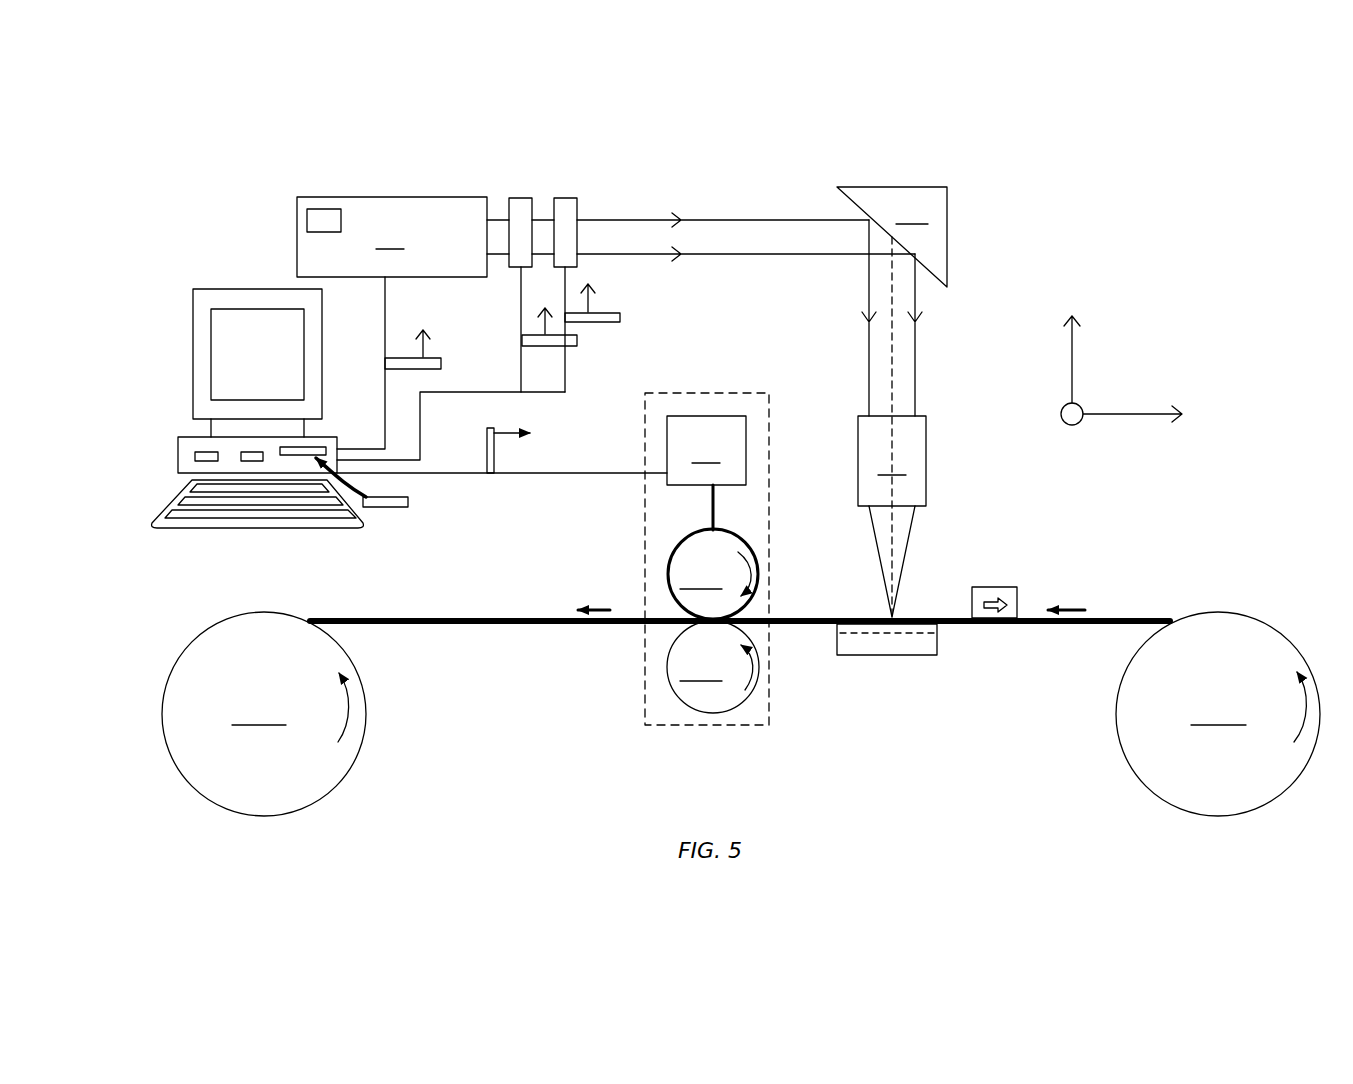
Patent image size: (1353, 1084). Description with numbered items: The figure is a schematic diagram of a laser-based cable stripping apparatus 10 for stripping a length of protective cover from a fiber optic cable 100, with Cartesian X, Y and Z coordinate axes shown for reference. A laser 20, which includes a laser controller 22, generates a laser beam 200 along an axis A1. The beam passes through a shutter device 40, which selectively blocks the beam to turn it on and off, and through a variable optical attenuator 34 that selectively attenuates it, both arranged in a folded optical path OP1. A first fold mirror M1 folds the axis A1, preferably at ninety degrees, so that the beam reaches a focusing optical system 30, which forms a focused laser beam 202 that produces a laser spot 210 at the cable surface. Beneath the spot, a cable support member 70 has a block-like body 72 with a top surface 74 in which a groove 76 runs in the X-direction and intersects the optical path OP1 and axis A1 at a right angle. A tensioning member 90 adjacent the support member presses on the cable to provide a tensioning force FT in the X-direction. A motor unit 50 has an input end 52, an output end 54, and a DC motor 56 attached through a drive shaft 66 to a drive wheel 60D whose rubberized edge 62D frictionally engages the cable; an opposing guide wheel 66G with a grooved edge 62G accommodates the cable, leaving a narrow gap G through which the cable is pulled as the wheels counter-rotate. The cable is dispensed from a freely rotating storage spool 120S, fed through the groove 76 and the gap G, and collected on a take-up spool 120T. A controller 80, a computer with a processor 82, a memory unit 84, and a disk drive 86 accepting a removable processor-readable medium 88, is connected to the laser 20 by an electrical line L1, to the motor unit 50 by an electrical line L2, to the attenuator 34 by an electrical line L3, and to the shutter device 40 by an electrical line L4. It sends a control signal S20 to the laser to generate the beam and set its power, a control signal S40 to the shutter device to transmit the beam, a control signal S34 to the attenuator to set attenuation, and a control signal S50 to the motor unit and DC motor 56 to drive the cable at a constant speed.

The laser-based cable stripping apparatus 10 is at (1006, 140).
The laser 20 is at (392, 237).
The laser controller 22 is at (307, 220).
The focusing optical system 30 is at (892, 461).
The variable optical attenuator 34 is at (566, 198).
The shutter device 40 is at (520, 198).
The motor unit 50 is at (706, 393).
The input end 52 is at (784, 682).
The output end 54 is at (636, 691).
The DC motor 56 is at (706, 450).
The drive wheel 60D is at (713, 574).
The rubberized edge 62D is at (672, 553).
The edge of guide wheel 62G is at (668, 659).
The drive shaft 66 is at (712, 527).
The guide roller 66G is at (713, 667).
The cable support member 70 is at (867, 655).
The block-like body 72 is at (936, 643).
The top surface 74 is at (907, 610).
The groove 76 is at (915, 636).
The controller 80 is at (170, 312).
The processor 82 is at (200, 452).
The memory unit 84 is at (253, 452).
The disk drive 86 is at (290, 457).
The removable processor-readable medium 88 is at (388, 507).
The tensioning member 90 is at (1016, 592).
The fiber optic cable 100 is at (398, 625).
The take-up spool 120T is at (264, 714).
The storage spool 120S is at (1218, 714).
The laser beam 200 is at (700, 214).
The focused laser beam 202 is at (868, 542).
The laser spot 210 is at (877, 612).
The first fold mirror M1 is at (892, 237).
The axis A1 is at (892, 290).
The folded optical path OP1 is at (847, 319).
The electrical line L1 is at (385, 312).
The electrical line L2 is at (436, 473).
The electrical line L3 is at (565, 371).
The electrical line L4 is at (521, 290).
The control signal S20 is at (441, 363).
The control signal S34 is at (620, 317).
The control signal S40 is at (577, 340).
The control signal S50 is at (525, 433).
The gap G is at (663, 609).
The tensioning force FT is at (990, 589).
The X coordinate axis X is at (1149, 416).
The Y coordinate axis Y is at (1072, 341).
The Z coordinate axis Z is at (1061, 424).